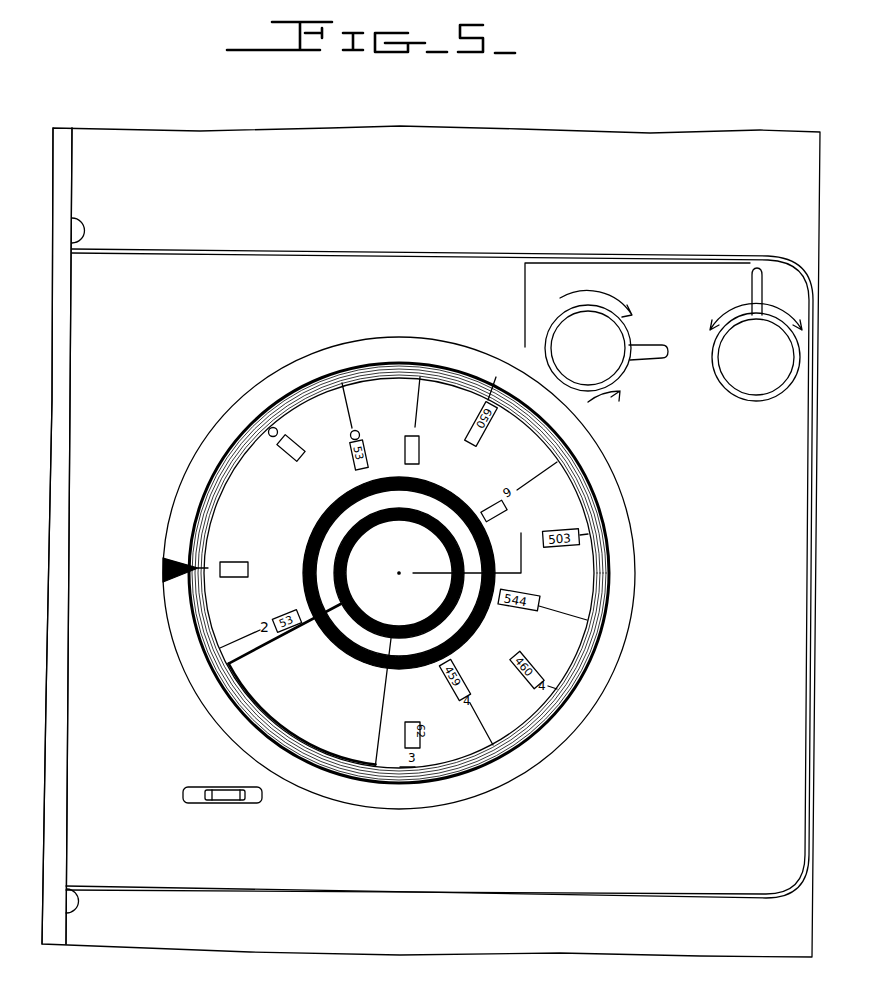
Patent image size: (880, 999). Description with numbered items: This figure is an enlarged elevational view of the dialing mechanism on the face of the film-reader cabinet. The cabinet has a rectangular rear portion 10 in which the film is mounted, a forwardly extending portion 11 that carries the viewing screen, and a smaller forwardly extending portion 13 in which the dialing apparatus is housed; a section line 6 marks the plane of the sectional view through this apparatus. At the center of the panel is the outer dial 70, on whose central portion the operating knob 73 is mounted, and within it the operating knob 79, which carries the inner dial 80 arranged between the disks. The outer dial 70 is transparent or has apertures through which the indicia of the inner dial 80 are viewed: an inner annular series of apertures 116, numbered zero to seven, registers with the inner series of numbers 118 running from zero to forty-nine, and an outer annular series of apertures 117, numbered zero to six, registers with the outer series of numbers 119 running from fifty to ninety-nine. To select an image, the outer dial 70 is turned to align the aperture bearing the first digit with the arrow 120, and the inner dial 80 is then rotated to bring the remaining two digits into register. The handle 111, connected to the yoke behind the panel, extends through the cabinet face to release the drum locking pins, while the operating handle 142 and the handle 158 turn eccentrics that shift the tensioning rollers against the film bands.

The section line 6 is at (153, 567).
The rear portion 10 is at (222, 940).
The forwardly extending portion 11 is at (60, 755).
The smaller forwardly extending portion 13 is at (439, 573).
The outer dial 70 is at (399, 573).
The operating knob 73 is at (468, 538).
The operating knob 79 is at (427, 573).
The inner dial 80 is at (330, 620).
The handle 111 is at (225, 804).
The inner annular series of apertures 116 is at (417, 462).
The outer annular series of apertures 117 is at (292, 438).
The inner annular series of numbers 118 is at (326, 650).
The outer annular series of numbers 119 is at (278, 701).
The arrow 120 is at (177, 578).
The operating handle 142 is at (653, 357).
The handle 158 is at (755, 380).